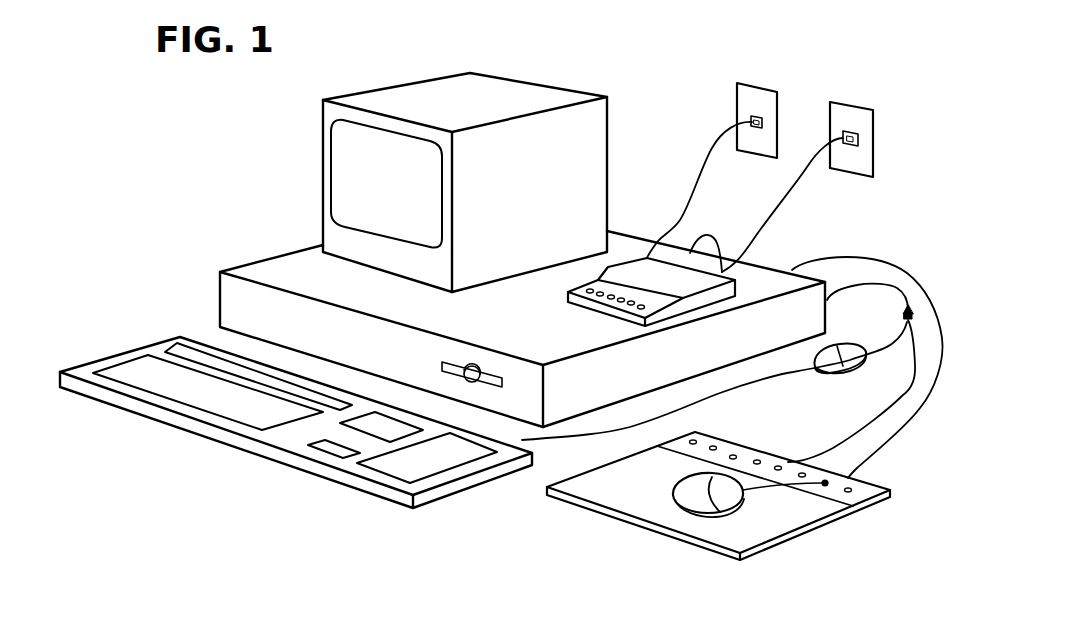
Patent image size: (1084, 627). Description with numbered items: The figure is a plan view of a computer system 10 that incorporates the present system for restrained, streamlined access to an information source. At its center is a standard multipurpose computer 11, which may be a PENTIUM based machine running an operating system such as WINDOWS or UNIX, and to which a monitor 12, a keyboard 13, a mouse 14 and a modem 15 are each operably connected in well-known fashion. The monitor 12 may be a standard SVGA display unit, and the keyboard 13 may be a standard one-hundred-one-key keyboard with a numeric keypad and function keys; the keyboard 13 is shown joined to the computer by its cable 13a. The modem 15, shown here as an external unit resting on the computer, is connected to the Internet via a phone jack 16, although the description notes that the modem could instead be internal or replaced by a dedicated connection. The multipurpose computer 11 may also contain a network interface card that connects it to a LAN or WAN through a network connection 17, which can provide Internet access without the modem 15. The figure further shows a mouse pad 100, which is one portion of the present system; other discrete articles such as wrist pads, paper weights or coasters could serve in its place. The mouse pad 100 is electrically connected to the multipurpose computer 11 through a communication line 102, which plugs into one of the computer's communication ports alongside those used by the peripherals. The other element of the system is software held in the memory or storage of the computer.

The computer system 10 is at (188, 189).
The multipurpose computer 11 is at (288, 263).
The monitor 12 is at (528, 92).
The keyboard 13 is at (277, 442).
The keyboard cable 13a is at (710, 400).
The mouse 14 is at (690, 505).
The modem 15 is at (637, 265).
The phone jack 16 is at (855, 102).
The network connection 17 is at (757, 84).
The mouse pad 100 is at (820, 519).
The communication line 102 is at (872, 287).